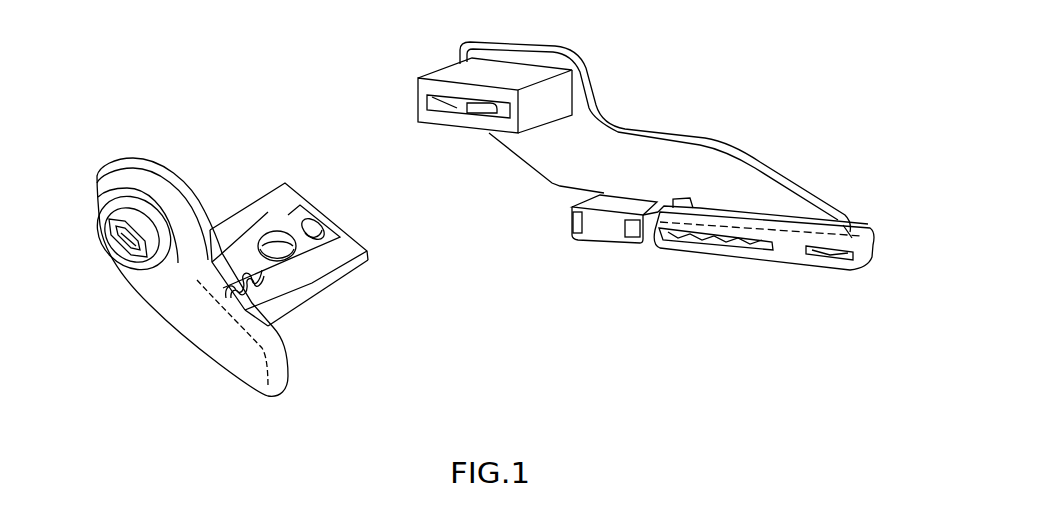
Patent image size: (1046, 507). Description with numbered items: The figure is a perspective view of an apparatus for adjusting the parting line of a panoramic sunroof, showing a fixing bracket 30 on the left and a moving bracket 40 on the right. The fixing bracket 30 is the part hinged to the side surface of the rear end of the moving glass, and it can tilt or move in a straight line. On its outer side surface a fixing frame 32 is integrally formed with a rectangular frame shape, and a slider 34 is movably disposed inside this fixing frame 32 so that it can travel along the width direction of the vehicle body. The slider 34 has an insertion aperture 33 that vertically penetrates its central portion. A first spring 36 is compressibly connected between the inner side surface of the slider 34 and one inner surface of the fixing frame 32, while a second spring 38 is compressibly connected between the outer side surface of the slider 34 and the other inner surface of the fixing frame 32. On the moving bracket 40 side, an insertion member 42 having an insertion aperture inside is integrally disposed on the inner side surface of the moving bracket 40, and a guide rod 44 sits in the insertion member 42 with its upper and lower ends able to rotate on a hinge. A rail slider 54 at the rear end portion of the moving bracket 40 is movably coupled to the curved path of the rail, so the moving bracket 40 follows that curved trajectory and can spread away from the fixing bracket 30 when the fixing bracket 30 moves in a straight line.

The fixing bracket 30 is at (182, 328).
The fixing frame 32 is at (273, 304).
The insertion aperture 33 is at (284, 252).
The slider 34 is at (277, 231).
The first spring 36 is at (243, 277).
The second spring 38 is at (340, 237).
The moving bracket 40 is at (655, 133).
The insertion member 42 is at (454, 75).
The guide rod 44 is at (472, 111).
The rail slider 54 is at (723, 248).